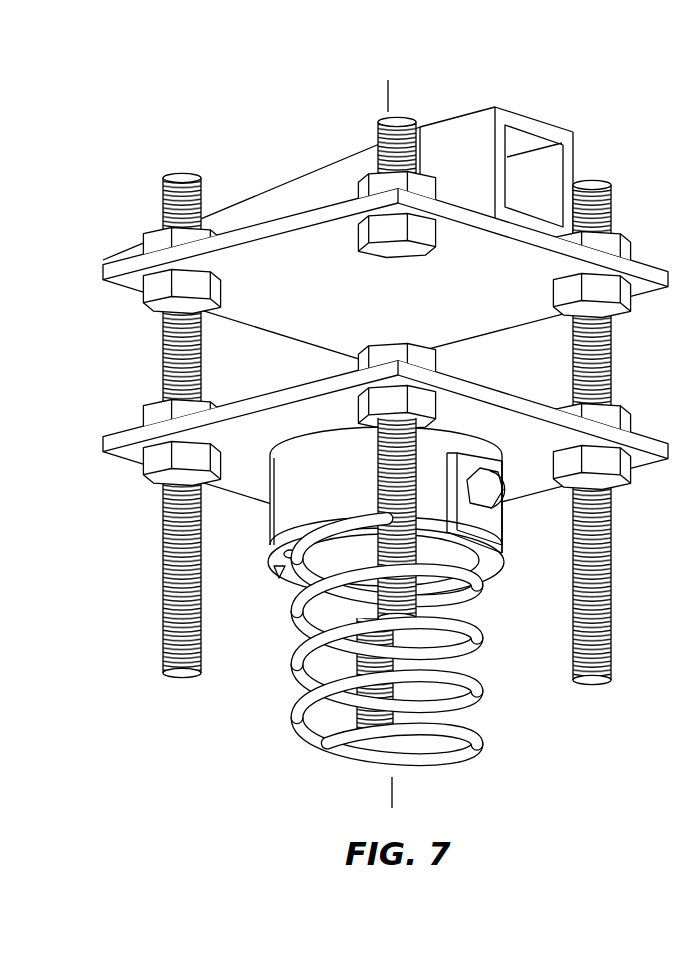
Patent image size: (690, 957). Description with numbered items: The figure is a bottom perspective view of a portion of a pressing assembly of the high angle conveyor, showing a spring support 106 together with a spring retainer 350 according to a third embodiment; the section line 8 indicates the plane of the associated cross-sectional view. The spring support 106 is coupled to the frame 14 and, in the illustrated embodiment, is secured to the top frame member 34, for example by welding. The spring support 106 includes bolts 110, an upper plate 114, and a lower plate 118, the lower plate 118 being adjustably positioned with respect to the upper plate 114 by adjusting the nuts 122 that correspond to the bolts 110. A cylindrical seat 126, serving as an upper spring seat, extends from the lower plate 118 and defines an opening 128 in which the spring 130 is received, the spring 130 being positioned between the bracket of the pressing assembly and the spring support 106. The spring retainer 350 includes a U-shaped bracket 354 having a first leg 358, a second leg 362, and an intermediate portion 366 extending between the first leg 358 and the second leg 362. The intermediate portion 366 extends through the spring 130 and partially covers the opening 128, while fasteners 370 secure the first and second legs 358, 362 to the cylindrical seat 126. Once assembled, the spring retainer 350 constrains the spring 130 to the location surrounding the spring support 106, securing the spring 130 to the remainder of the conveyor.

The section line 8- 8 is at (380, 95).
The frame 14 is at (338, 183).
The top frame member 34 is at (262, 192).
The spring support 106 is at (128, 511).
The bolts 110 is at (384, 290).
The upper plate 114 is at (121, 267).
The lower plate 118 is at (104, 449).
The nuts 122 is at (430, 408).
The cylindrical seat 126 is at (286, 487).
The opening 128 is at (277, 556).
The spring 130 is at (306, 647).
The spring retainer 350 is at (524, 621).
The U-shaped bracket 354 is at (509, 512).
The first leg 358 is at (490, 523).
The second leg 362 is at (271, 571).
The intermediate portion 366 is at (509, 512).
The fasteners 370 is at (492, 487).